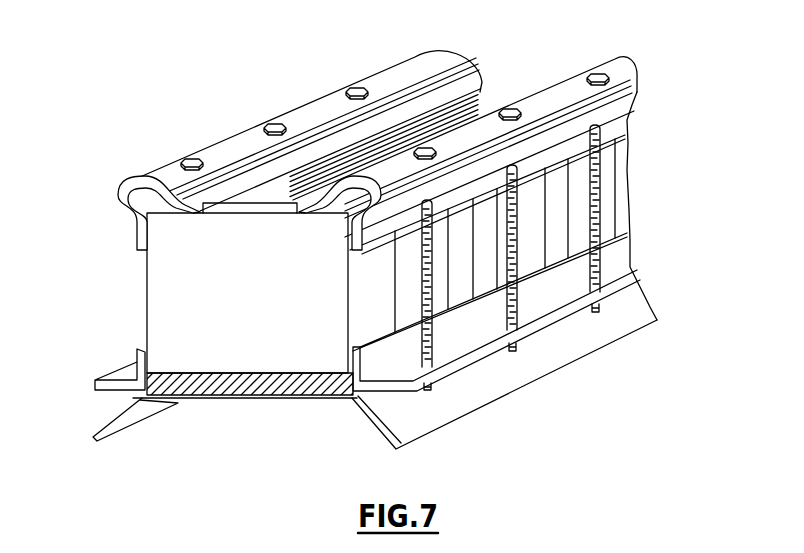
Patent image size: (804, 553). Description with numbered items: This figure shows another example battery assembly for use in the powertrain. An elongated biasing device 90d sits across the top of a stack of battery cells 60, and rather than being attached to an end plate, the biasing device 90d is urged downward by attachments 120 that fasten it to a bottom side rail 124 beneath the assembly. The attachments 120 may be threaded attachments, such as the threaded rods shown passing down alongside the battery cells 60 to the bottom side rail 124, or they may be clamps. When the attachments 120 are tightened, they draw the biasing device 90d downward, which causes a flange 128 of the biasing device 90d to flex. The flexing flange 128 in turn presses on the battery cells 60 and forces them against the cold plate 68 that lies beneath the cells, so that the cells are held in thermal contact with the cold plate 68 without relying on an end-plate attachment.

The battery cells 60 is at (303, 347).
The cold plate 68 is at (293, 390).
The biasing device 90d is at (562, 96).
The attachments 120 is at (598, 203).
The bottom side rail 124 is at (628, 278).
The flange 128 is at (313, 207).